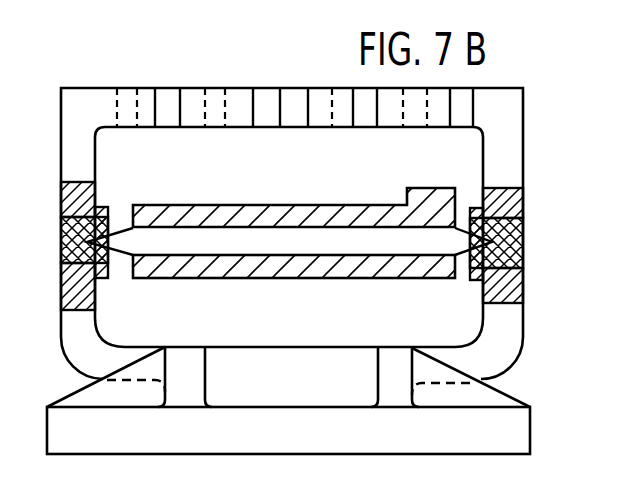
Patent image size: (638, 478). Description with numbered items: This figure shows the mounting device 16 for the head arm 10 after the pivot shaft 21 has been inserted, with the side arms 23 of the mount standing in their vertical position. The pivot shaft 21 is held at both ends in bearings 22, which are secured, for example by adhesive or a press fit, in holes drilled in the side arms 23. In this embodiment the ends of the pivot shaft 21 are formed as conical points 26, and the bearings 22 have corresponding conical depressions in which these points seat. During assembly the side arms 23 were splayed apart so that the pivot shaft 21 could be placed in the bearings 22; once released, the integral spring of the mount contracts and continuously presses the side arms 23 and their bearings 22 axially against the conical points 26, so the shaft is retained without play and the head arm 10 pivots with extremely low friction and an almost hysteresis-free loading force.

The head arm 10 is at (322, 204).
The mounting device 16 is at (236, 83).
The pivot shaft 21 is at (371, 252).
The bearings 22 is at (510, 250).
The side arms 23 is at (93, 88).
The conical points 26 is at (123, 248).